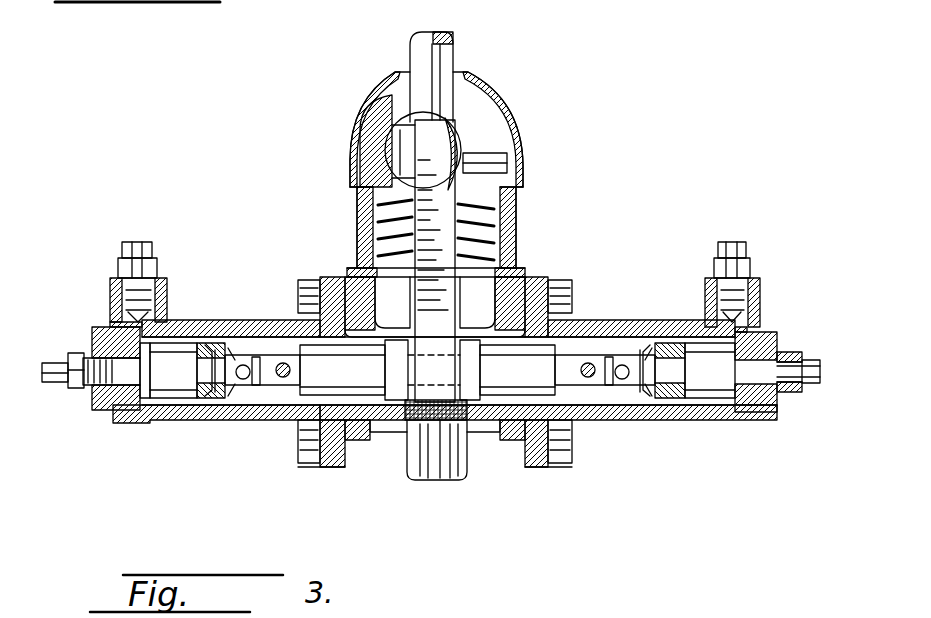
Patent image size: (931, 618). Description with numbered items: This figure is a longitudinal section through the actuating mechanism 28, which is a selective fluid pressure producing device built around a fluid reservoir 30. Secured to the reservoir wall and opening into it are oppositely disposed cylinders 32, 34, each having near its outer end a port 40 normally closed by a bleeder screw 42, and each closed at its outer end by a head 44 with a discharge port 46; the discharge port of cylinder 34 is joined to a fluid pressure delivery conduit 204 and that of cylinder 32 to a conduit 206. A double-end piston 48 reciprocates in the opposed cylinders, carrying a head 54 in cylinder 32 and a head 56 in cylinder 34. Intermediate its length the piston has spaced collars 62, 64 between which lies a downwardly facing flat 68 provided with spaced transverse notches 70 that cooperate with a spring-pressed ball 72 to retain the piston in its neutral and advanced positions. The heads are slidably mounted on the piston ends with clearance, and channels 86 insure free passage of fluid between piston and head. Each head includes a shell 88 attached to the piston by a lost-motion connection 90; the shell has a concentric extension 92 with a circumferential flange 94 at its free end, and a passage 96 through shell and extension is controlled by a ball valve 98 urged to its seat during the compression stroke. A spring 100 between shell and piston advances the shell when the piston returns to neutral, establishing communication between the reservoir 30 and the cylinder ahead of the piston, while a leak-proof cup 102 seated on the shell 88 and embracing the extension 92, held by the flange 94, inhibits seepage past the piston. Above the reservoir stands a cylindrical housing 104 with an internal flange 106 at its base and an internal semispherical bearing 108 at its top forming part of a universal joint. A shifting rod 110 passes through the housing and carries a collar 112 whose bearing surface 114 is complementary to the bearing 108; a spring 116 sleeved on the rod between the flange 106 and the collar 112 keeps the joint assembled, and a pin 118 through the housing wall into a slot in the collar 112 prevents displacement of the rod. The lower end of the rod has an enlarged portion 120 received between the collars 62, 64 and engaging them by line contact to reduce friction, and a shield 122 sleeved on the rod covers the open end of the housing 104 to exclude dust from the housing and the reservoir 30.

The actuating mechanism 28 is at (344, 217).
The fluid reservoir 30 is at (385, 323).
The cylinder 32 is at (158, 423).
The cylinder 34 is at (702, 423).
The port 40 is at (137, 322).
The bleeder screw 42 is at (120, 258).
The head 44 is at (93, 335).
The discharge port 46 is at (107, 408).
The double-end piston 48 is at (325, 463).
The head 54 is at (260, 400).
The head 56 is at (617, 400).
The collar 62 is at (400, 420).
The collar 64 is at (473, 420).
The flat 68 is at (418, 407).
The transverse notches 70 is at (432, 400).
The spring-pressed ball 72 is at (433, 440).
The channels 86 is at (280, 392).
The shell 88 is at (255, 356).
The lost-motion connection 90 is at (282, 362).
The concentric extension 92 is at (212, 397).
The circumferential flange 94 is at (205, 396).
The passage 96 is at (198, 383).
The ball valve 98 is at (240, 343).
The spring 100 is at (245, 360).
The leak-proof cup 102 is at (210, 345).
The cylindrical housing 104 is at (513, 227).
The internal flange 106 is at (518, 268).
The semispherical bearing 108 is at (493, 130).
The shifting rod 110 is at (455, 43).
The collar 112 is at (397, 168).
The bearing surface 114 is at (392, 133).
The spring 116 is at (470, 207).
The pin 118 is at (498, 163).
The enlarged portion 120 is at (470, 437).
The shield 122 is at (480, 90).
The fluid pressure delivery conduit 204 is at (813, 385).
The fluid pressure delivery conduit 206 is at (53, 382).